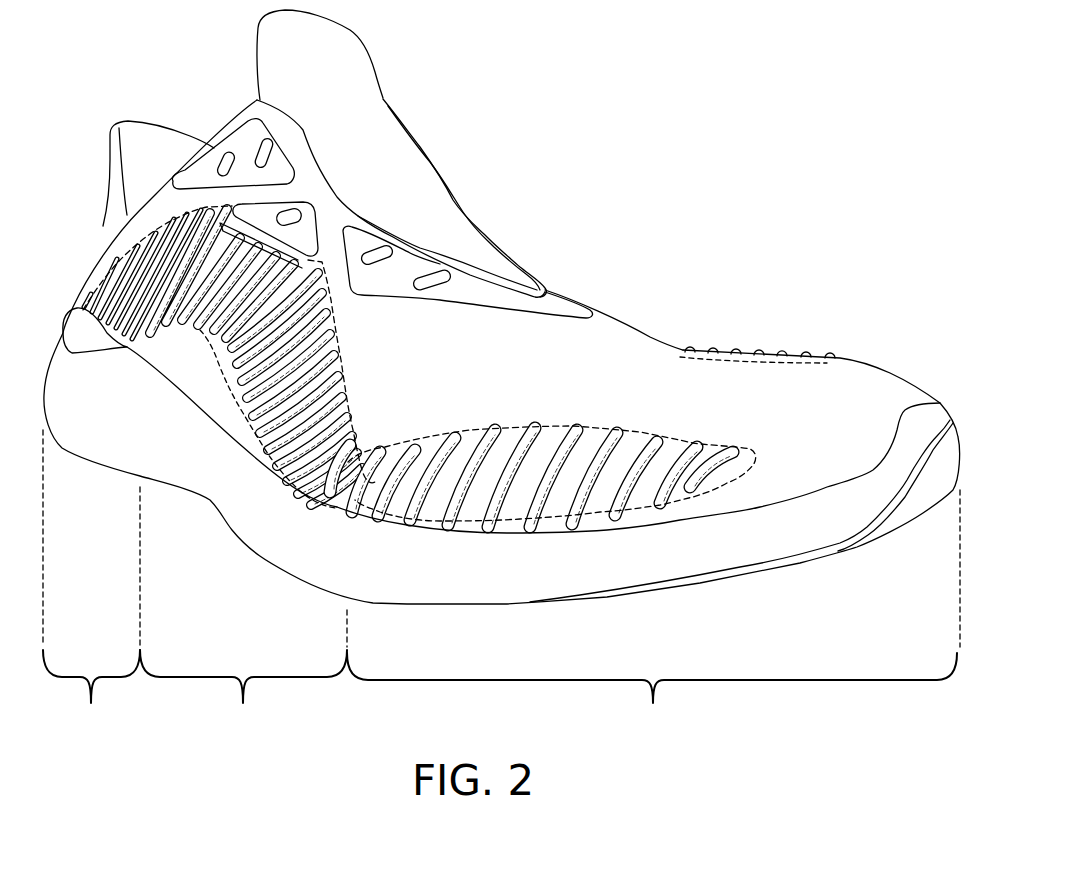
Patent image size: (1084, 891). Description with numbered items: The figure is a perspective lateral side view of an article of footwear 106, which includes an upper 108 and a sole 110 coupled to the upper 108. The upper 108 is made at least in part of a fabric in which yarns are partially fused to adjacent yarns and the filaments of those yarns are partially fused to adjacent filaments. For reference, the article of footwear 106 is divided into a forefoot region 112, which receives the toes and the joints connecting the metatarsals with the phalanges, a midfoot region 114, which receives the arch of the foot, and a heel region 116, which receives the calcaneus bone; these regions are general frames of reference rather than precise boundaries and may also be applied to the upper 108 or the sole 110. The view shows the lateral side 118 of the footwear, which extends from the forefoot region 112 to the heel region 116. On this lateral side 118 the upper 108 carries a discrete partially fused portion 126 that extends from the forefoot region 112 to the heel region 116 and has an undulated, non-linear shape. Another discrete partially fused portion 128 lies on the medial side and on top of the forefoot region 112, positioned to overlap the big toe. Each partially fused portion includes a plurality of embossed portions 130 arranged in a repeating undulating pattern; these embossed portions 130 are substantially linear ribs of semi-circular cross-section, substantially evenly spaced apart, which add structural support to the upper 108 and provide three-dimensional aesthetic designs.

The article of footwear 106 is at (592, 177).
The upper 108 is at (150, 210).
The sole 110 is at (100, 443).
The forefoot region 112 is at (653, 617).
The midfoot region 114 is at (243, 677).
The heel region 116 is at (91, 587).
The lateral side 118 is at (190, 363).
The partially fused portion 126 is at (617, 430).
The partially fused portion 128 is at (810, 370).
The embossed portions 130 is at (483, 457).